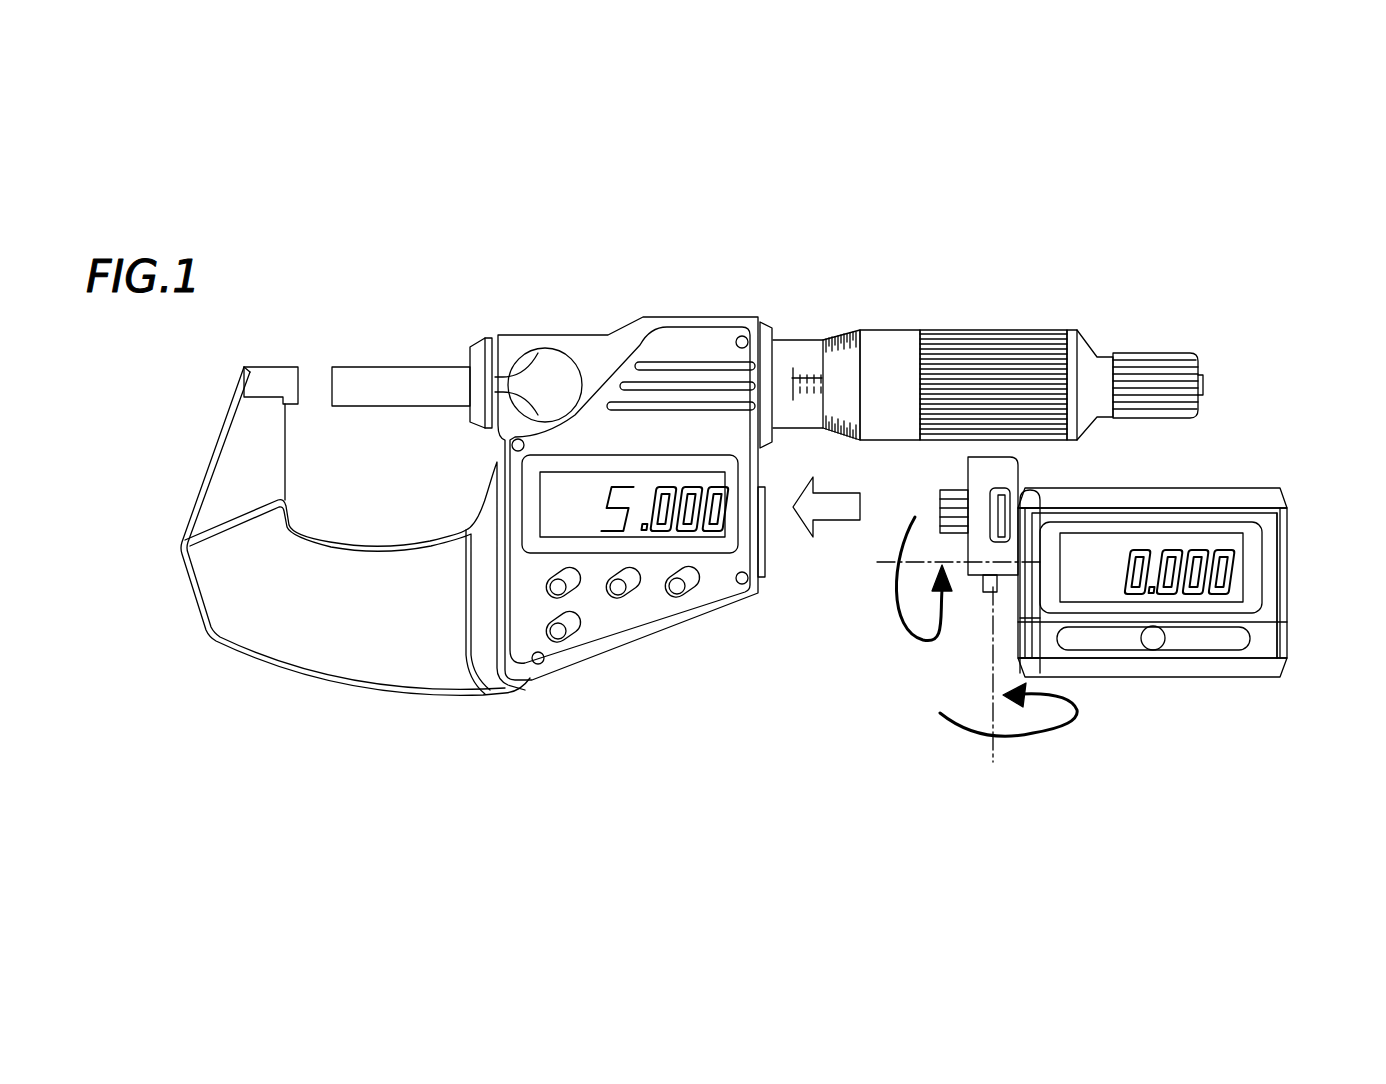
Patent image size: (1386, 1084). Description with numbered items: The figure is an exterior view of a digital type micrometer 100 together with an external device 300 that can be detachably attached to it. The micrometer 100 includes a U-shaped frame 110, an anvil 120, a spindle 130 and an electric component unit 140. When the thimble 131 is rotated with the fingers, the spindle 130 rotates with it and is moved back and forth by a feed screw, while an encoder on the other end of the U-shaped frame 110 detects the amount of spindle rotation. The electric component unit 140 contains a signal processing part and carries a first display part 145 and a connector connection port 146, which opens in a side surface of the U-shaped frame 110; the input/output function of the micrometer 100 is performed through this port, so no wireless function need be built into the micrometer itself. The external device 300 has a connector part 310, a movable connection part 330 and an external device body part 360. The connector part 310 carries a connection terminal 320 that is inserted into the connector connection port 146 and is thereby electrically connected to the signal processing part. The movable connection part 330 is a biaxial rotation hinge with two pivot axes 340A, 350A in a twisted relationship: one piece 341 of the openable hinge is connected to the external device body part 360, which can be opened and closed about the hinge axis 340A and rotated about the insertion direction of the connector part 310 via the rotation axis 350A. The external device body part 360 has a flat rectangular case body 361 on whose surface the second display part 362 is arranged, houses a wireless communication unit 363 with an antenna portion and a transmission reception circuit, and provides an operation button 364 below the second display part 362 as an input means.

The micrometer 100 is at (600, 283).
The U-shaped frame 110 is at (307, 663).
The anvil 120 is at (270, 363).
The spindle 130 is at (397, 370).
The thimble 131 is at (995, 332).
The electric component unit 140 is at (713, 592).
The first display part 145 is at (602, 517).
The connector connection port 146 is at (783, 542).
The external device 300 is at (1235, 692).
The connector part 310 is at (968, 478).
The connection terminal 320 is at (940, 508).
The movable connection part 330 is at (972, 593).
The hinge axis 340A is at (996, 748).
The one piece of the openable hinge 341 is at (1010, 583).
The rotation axis 350A is at (893, 563).
The external device body part 360 is at (1098, 665).
The case body 361 is at (1247, 492).
The second display part 362 is at (1237, 587).
The wireless communication unit 363 is at (1270, 537).
The operation button 364 is at (1153, 650).